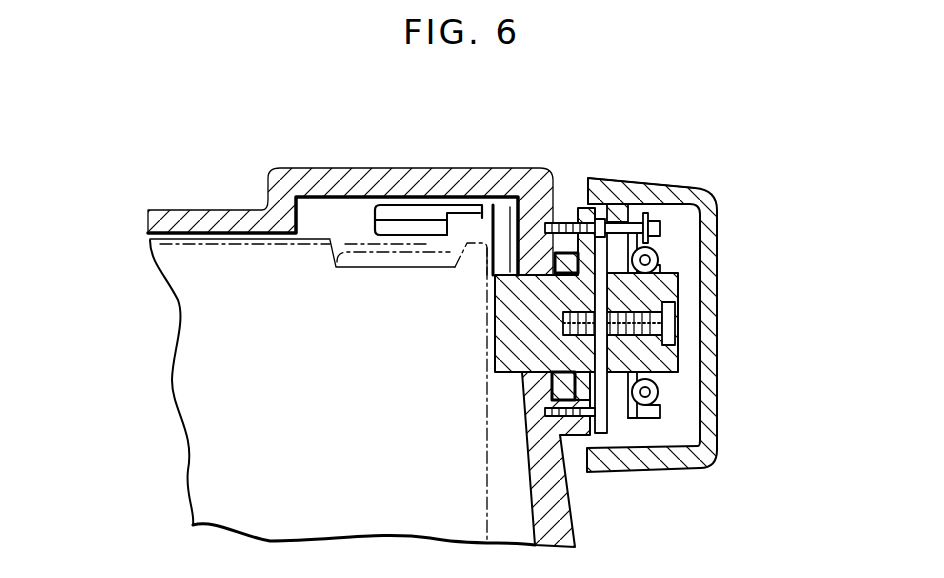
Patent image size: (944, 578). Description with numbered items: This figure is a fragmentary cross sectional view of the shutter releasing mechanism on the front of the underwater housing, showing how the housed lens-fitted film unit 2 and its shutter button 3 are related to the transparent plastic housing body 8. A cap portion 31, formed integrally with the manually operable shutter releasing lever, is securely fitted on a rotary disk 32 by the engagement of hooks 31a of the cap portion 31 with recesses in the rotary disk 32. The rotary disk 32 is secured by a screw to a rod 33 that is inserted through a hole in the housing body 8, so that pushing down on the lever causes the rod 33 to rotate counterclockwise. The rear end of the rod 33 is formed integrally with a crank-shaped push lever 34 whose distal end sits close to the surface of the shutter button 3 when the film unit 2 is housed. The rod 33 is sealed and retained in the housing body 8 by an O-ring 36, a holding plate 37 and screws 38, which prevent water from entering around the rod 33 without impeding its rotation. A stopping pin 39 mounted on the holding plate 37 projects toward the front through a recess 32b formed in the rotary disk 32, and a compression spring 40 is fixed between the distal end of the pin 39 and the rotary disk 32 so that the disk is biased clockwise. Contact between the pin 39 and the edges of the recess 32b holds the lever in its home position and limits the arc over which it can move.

The lens-fitted film unit 2 is at (195, 376).
The shutter button 3 is at (357, 256).
The housing body 8 is at (192, 212).
The cap portion 31 is at (720, 294).
The hooks 31a is at (586, 190).
The rotary disk 32 is at (643, 463).
The recess 32b is at (623, 203).
The rod 33 is at (508, 307).
The push lever 34 is at (409, 206).
The O-ring 36 is at (553, 388).
The holding plate 37 is at (578, 437).
The screws 38 is at (557, 413).
The stopping pin 39 is at (662, 227).
The compression spring 40 is at (658, 392).